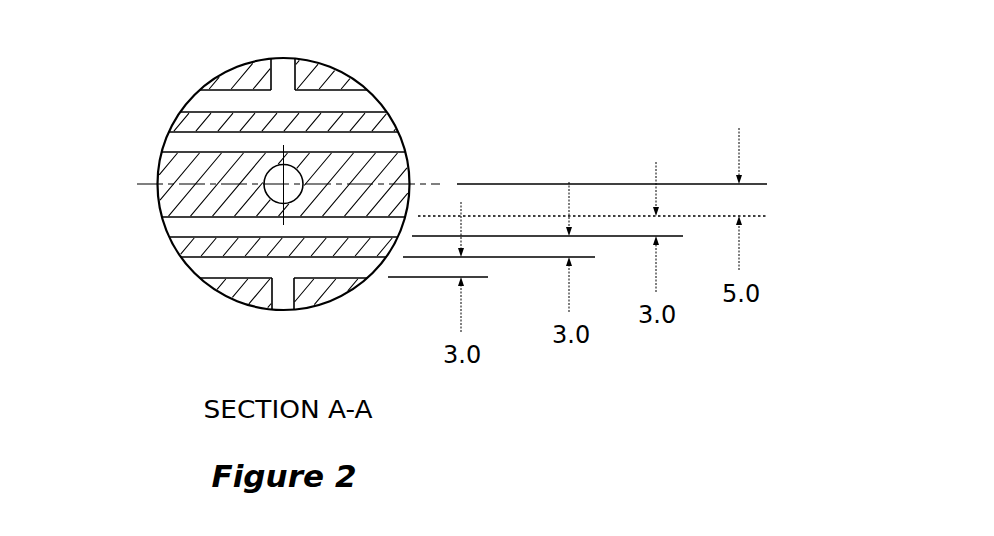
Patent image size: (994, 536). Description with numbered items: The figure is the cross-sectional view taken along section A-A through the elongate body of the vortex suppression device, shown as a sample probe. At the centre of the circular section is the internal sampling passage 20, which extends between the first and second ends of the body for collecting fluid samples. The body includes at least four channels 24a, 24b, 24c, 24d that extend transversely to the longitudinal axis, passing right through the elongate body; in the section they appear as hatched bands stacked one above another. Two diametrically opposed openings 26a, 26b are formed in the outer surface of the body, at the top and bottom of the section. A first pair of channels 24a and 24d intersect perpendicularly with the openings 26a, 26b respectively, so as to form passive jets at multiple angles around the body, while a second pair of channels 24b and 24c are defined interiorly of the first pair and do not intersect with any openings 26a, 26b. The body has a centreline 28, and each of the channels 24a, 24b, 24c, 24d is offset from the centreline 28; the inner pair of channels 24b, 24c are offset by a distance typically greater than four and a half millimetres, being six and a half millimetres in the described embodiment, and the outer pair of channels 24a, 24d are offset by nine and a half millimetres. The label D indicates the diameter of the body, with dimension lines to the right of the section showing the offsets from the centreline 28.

The internal sampling passage 20 is at (265, 179).
The channel 24a is at (200, 100).
The channel 24b is at (175, 143).
The channel 24c is at (175, 226).
The channel 24d is at (197, 268).
The opening 26a is at (283, 72).
The opening 26b is at (280, 302).
The centreline 28 is at (425, 182).
The diameter D is at (413, 157).
The section plane A- A is at (147, 195).